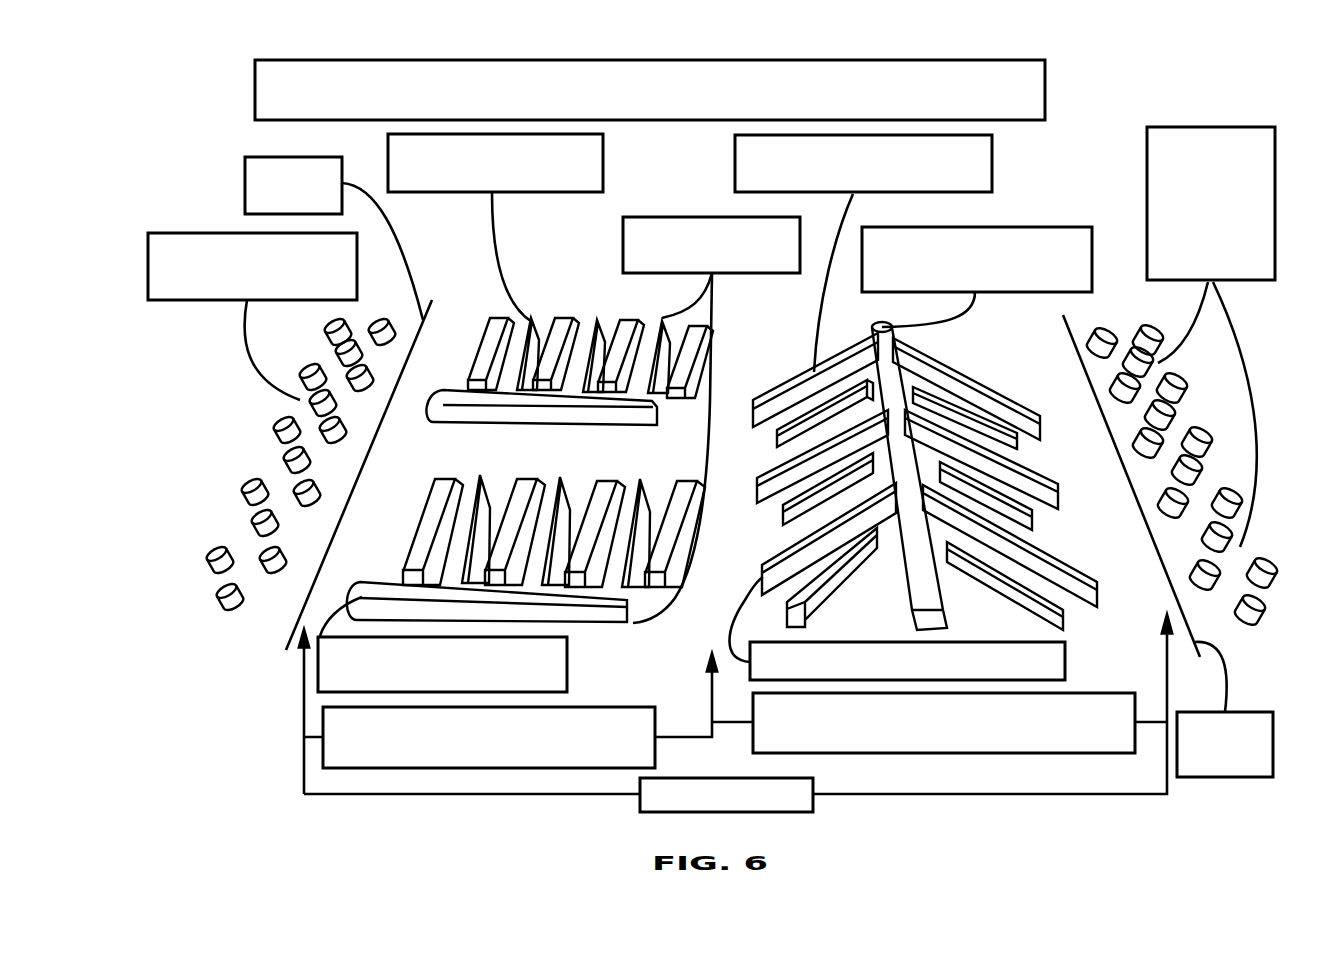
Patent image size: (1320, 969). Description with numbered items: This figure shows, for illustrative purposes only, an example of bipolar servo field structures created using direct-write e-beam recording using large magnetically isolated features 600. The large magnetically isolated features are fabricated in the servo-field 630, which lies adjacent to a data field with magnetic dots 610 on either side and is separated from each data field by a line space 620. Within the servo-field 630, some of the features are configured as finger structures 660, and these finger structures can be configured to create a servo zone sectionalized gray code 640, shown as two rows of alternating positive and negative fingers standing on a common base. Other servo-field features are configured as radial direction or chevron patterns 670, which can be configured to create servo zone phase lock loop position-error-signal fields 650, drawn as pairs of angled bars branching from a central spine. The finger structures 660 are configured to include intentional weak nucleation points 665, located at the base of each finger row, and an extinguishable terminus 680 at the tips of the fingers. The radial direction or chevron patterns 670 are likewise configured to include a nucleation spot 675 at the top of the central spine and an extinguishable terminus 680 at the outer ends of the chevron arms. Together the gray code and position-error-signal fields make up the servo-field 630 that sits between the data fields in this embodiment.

The large magnetically isolated features 600 is at (1046, 102).
The data field with magnetic dots 610 is at (155, 243).
The line space 620 is at (255, 166).
The servo-field 630 is at (805, 787).
The servo zone sectionalized gray code 640 is at (648, 712).
The servo zone phase lock loop position-error-signal fields 650 is at (1127, 745).
The finger structures 660 is at (632, 228).
The intentional weak nucleation points 665 is at (554, 663).
The radial direction or chevron patterns 670 is at (992, 182).
The nucleation spot 675 is at (1093, 258).
The extinguishable terminus 680 is at (595, 177).